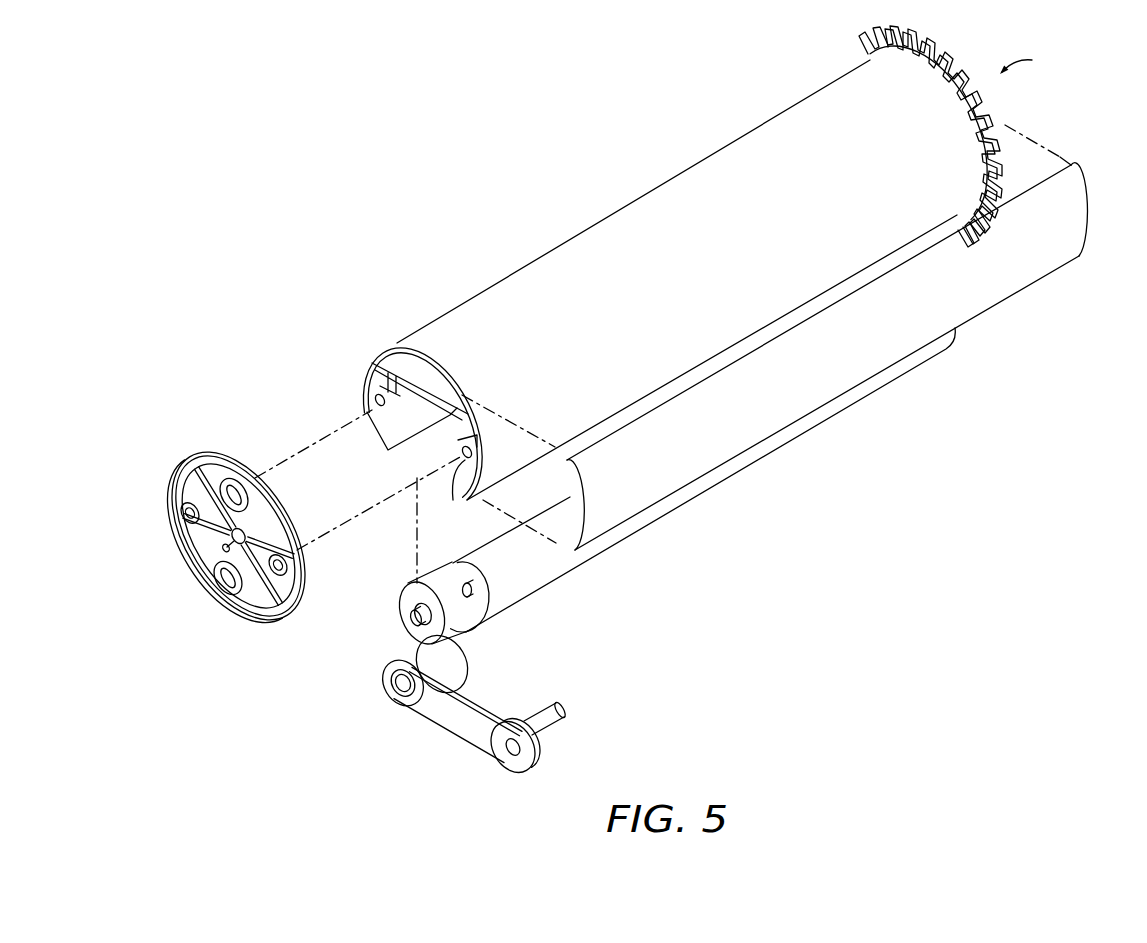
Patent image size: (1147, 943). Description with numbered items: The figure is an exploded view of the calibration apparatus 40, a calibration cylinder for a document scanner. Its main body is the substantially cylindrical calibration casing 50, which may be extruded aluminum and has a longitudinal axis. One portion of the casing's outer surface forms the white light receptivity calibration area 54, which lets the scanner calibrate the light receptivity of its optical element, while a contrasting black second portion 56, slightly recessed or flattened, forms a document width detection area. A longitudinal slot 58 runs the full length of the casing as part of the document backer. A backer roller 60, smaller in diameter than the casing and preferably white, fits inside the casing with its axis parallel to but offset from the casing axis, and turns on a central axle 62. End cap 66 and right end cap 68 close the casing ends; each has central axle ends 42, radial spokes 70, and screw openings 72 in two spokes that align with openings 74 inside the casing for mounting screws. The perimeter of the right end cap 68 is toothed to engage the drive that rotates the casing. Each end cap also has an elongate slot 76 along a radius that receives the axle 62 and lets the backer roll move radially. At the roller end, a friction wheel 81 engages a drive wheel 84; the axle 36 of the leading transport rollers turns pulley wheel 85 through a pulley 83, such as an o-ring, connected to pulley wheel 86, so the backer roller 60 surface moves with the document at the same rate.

The calibration apparatus 40 is at (759, 70).
The right end cap 68 is at (1006, 112).
The light receptivity calibration area 54 is at (1074, 218).
The calibration casing 50 is at (430, 330).
The end cap 66 is at (181, 445).
The second portion 56 is at (372, 428).
The openings 74 is at (467, 462).
The longitudinal slot 58 is at (429, 492).
The backer roller 60 is at (536, 579).
The central axle 62 is at (414, 625).
The friction wheel 81 is at (404, 604).
The drive wheel 84 is at (465, 661).
The pulley wheel 85 is at (414, 707).
The pulley 83 is at (464, 728).
The pulley wheel 86 is at (521, 763).
The axle 36 is at (557, 727).
The screw openings 72 is at (187, 519).
The radial spokes 70 is at (230, 548).
The central axle ends 42 is at (228, 582).
The elongate slot 76 is at (270, 618).